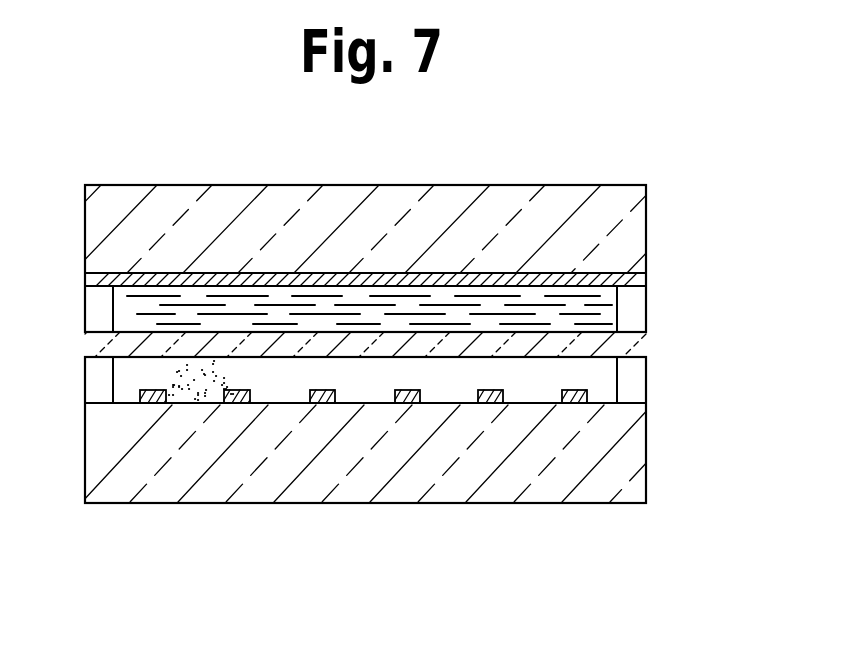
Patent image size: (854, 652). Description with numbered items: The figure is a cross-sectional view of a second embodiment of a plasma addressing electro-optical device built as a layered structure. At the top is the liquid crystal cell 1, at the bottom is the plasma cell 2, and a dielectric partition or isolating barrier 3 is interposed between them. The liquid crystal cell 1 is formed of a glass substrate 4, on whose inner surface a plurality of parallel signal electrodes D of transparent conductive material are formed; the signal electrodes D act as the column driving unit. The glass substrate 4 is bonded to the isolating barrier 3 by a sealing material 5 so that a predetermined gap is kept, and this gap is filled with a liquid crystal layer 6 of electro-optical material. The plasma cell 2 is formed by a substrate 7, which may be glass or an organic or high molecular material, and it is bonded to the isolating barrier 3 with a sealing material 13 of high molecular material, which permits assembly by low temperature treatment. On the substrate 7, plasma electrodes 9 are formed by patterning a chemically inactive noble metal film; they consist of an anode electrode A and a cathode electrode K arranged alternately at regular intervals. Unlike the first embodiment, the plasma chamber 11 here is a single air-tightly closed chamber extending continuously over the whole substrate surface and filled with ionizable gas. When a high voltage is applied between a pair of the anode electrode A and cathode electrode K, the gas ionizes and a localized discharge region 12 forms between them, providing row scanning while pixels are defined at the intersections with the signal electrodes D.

The liquid crystal cell 1 is at (74, 187).
The plasma cell 2 is at (74, 353).
The dielectric partition (isolating barrier) 3 is at (637, 341).
The glass substrate 4 is at (427, 185).
The sealing material 5 is at (632, 317).
The liquid crystal layer 6 is at (623, 302).
The substrate 7 is at (630, 475).
The plasma electrodes 9 is at (593, 547).
The plasma chamber 11 is at (607, 383).
The discharge region 12 is at (208, 382).
The sealing material 13 is at (637, 368).
The signal electrodes D is at (638, 280).
The cathode electrode K is at (157, 401).
The anode electrode A is at (243, 401).